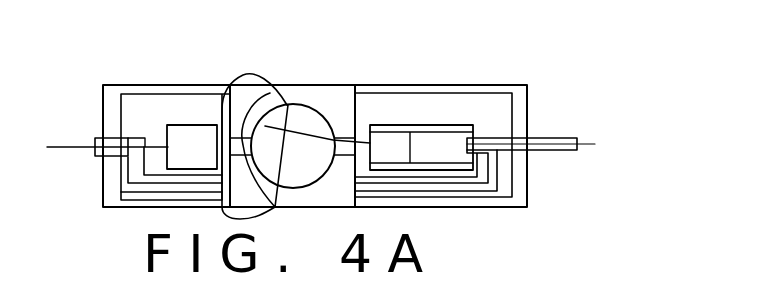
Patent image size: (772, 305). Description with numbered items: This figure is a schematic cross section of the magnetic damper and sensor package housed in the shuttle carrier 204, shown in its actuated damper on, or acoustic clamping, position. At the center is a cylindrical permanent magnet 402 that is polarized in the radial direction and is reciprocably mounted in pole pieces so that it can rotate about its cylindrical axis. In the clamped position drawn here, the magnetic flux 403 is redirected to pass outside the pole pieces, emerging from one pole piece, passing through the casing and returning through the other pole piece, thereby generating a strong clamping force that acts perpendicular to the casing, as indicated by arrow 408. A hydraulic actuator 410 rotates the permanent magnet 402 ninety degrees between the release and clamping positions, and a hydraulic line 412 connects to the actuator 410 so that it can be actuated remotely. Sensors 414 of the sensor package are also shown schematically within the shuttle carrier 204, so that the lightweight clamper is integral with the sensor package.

The shuttle carrier 204 is at (432, 56).
The permanent magnet 402 is at (310, 123).
The magnetic flux 403 is at (245, 73).
The arrow 408 is at (93, 172).
The hydraulic actuator 410 is at (445, 143).
The hydraulic line 412 is at (550, 153).
The sensors 414 is at (168, 125).